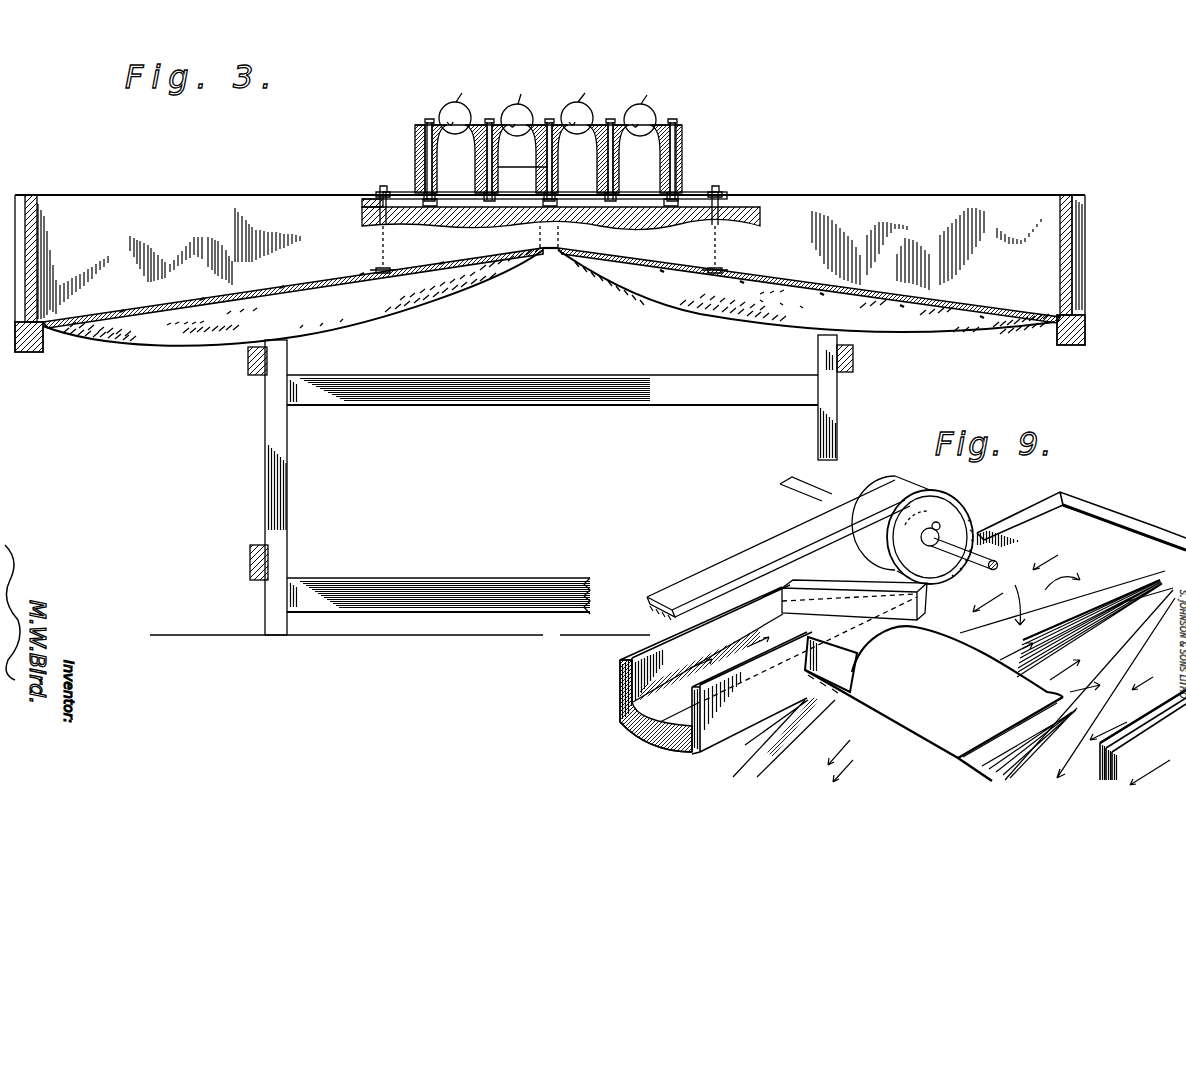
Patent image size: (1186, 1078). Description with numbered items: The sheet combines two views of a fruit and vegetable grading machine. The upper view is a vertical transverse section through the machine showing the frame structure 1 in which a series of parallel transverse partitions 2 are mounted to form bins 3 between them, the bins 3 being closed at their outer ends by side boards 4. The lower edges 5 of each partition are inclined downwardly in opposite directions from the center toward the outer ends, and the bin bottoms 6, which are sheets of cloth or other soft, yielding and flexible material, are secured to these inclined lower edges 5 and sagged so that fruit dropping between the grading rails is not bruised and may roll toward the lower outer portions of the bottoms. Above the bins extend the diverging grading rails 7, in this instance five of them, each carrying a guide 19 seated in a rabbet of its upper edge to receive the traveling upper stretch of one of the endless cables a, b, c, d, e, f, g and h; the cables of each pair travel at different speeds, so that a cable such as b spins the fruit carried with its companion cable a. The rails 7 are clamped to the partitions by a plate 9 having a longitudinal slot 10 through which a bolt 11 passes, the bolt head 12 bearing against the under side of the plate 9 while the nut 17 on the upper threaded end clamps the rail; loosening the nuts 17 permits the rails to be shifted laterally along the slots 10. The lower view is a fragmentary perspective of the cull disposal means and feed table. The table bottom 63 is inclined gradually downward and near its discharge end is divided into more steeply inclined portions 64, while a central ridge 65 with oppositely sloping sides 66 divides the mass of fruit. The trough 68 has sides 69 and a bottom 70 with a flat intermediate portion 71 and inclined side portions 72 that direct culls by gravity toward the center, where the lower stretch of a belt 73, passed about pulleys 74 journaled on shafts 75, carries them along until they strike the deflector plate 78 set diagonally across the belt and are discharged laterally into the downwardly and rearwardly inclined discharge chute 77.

In FIG. 3, the frame structure 1 is at (818, 433).
In FIG. 3, the transverse partitions 2 is at (915, 205).
In FIG. 3, the bins 3 is at (996, 210).
In FIG. 3, the side boards 4 is at (1068, 195).
In FIG. 3, the inclined lower edges 5 is at (862, 294).
In FIG. 3, the bin bottoms 6 is at (776, 292).
In FIG. 3, the grading rails 7 is at (693, 161).
In FIG. 3, the plate 9 is at (722, 192).
In FIG. 3, the slot 10 is at (690, 195).
In FIG. 3, the bolt 11 is at (415, 168).
In FIG. 3, the bolt head 12 is at (470, 198).
In FIG. 3, the nut 17 is at (428, 127).
In FIG. 3, the guide 19 is at (618, 125).
In FIG. 3, the cable a is at (436, 125).
In FIG. 3, the cable b is at (477, 124).
In FIG. 3, the cable c is at (498, 124).
In FIG. 3, the cable d is at (538, 124).
In FIG. 3, the cable e is at (560, 125).
In FIG. 3, the cable f is at (600, 125).
In FIG. 3, the cable g is at (624, 125).
In FIG. 3, the cable h is at (663, 125).
In FIG. 9, the table bottom 63 is at (1100, 530).
In FIG. 9, the steeply inclined portions 64 is at (817, 753).
In FIG. 9, the ridge 65 is at (1080, 632).
In FIG. 9, the ridge sides 66 is at (1118, 604).
In FIG. 9, the trough 68 is at (700, 750).
In FIG. 9, the trough sides 69 is at (620, 677).
In FIG. 9, the trough bottom 70 is at (630, 724).
In FIG. 9, the horizontal intermediate portion 71 is at (650, 736).
In FIG. 9, the inclined side portions 72 is at (640, 700).
In FIG. 9, the belt 73 is at (675, 710).
In FIG. 9, the pulleys 74 is at (942, 515).
In FIG. 9, the shafts 75 is at (822, 500).
In FIG. 9, the discharge chute 77 is at (941, 703).
In FIG. 9, the deflector plate 78 is at (832, 608).